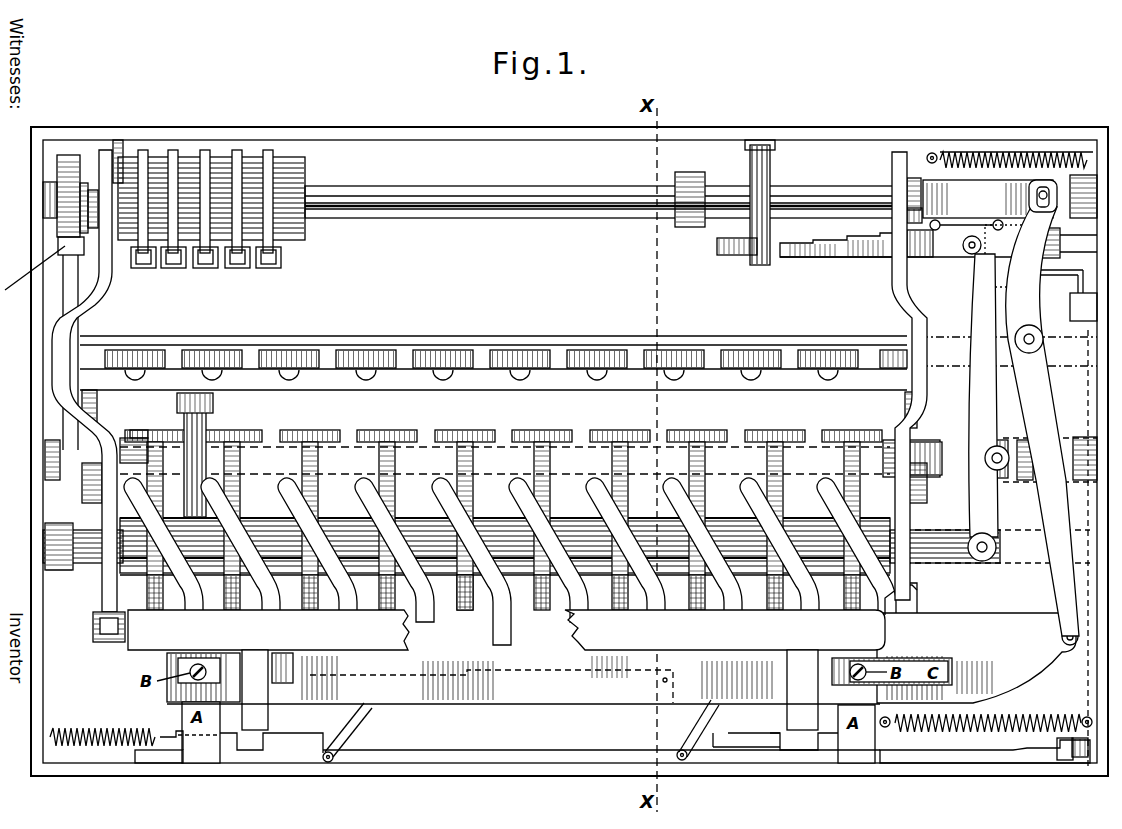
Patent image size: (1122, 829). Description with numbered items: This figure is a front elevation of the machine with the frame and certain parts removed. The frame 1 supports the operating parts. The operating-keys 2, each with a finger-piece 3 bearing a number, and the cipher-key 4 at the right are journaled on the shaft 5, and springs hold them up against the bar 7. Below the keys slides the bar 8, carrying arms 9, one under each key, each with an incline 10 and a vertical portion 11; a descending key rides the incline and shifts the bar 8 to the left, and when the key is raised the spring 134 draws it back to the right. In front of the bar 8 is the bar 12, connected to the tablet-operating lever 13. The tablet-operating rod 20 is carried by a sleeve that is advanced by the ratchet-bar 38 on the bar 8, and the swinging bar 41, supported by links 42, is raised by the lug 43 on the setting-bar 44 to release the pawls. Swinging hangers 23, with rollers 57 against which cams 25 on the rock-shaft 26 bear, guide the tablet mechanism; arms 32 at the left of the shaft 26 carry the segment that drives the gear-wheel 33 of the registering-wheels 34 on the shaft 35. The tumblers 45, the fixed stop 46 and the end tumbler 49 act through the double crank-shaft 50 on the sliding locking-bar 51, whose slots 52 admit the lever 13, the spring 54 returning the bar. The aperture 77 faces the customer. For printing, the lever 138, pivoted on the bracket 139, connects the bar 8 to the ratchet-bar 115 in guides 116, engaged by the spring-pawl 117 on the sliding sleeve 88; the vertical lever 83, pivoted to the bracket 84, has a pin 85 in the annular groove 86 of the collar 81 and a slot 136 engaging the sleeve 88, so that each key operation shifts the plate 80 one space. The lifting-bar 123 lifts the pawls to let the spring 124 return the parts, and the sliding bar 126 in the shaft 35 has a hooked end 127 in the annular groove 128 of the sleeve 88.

The frame 1 is at (408, 343).
The operating-keys 2 is at (328, 465).
The finger-piece 3 is at (318, 431).
The cipher-key 4 is at (850, 448).
The shaft 5 is at (93, 558).
The bar 7 is at (493, 400).
The bar 8 is at (988, 618).
The arms 9 is at (478, 528).
The incline 10 is at (404, 528).
The vertical portion 11 is at (478, 593).
The bar 12 is at (506, 630).
The tablet-operating lever 13 is at (268, 715).
The tablet-operating rod 20 is at (910, 577).
The swinging hangers 23 is at (100, 598).
The cams 25 is at (97, 408).
The rock-shaft 26 is at (135, 452).
The arms 32 is at (70, 282).
The gear-wheel 33 is at (70, 158).
The registering-wheels 34 is at (190, 170).
The shaft 35 is at (458, 188).
The ratchet-bar 38 is at (492, 680).
The swinging bar 41 is at (960, 752).
The links 42 is at (356, 716).
The lug 43 is at (1062, 763).
The setting-bar 44 is at (1082, 760).
The tumblers 45 is at (525, 352).
The fixed stop 46 is at (912, 352).
The tumbler 49 is at (140, 352).
The double crank-shaft 50 is at (207, 428).
The sliding locking-bar 51 is at (545, 757).
The slots 52 is at (529, 743).
The spring 54 is at (80, 727).
The roller 57 is at (88, 490).
The aperture 77 is at (918, 607).
The plate 80 is at (1078, 438).
The collar 81 is at (1024, 480).
The vertical lever 83 is at (983, 395).
The bracket 84 is at (1022, 552).
The pin 85 is at (982, 448).
The annular groove 86 is at (997, 446).
The sliding sleeve 88 is at (988, 199).
The sliding ratchet-bar 115 is at (928, 252).
The guides 116 is at (755, 252).
The spring-pawl 117 is at (962, 255).
The lifting-bar 123 is at (1072, 302).
The spring 124 is at (1045, 155).
The sliding bar 126 is at (545, 212).
The hooked end 127 is at (910, 215).
The annular groove 128 is at (908, 183).
The spring 134 is at (1020, 715).
The slot 136 is at (1040, 190).
The lever 138 is at (1042, 421).
The bracket 139 is at (1044, 339).